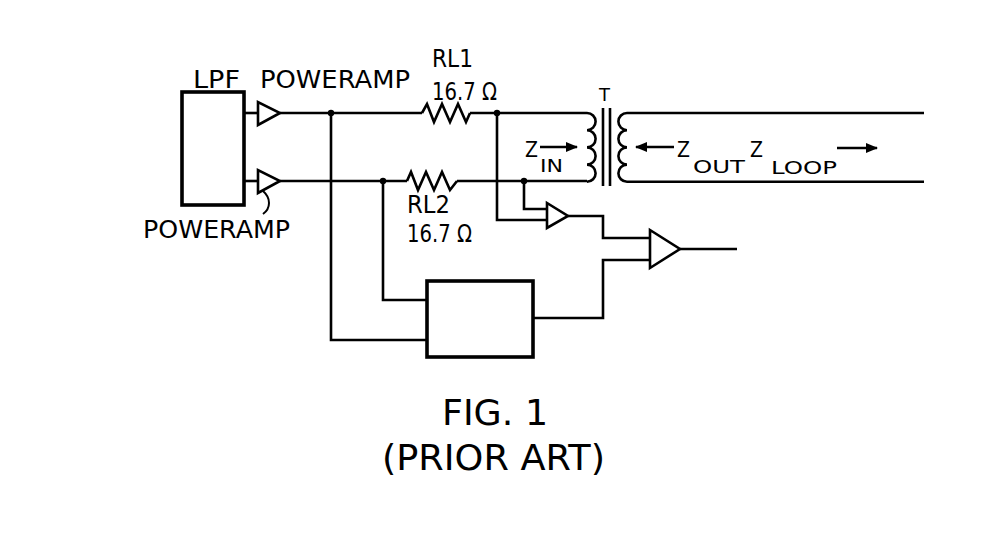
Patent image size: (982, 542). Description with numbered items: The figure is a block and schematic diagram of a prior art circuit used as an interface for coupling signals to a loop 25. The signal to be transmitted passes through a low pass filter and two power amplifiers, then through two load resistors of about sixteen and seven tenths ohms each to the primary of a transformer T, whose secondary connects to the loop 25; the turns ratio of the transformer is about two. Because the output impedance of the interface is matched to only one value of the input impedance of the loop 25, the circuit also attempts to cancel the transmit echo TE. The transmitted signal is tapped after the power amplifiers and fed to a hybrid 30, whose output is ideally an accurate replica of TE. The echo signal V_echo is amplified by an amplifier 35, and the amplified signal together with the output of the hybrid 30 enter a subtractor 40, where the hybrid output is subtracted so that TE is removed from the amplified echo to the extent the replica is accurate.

The loop 25 is at (734, 104).
The hybrid 30 is at (425, 347).
The amplifier 35 is at (561, 211).
The subtractor 40 is at (668, 237).